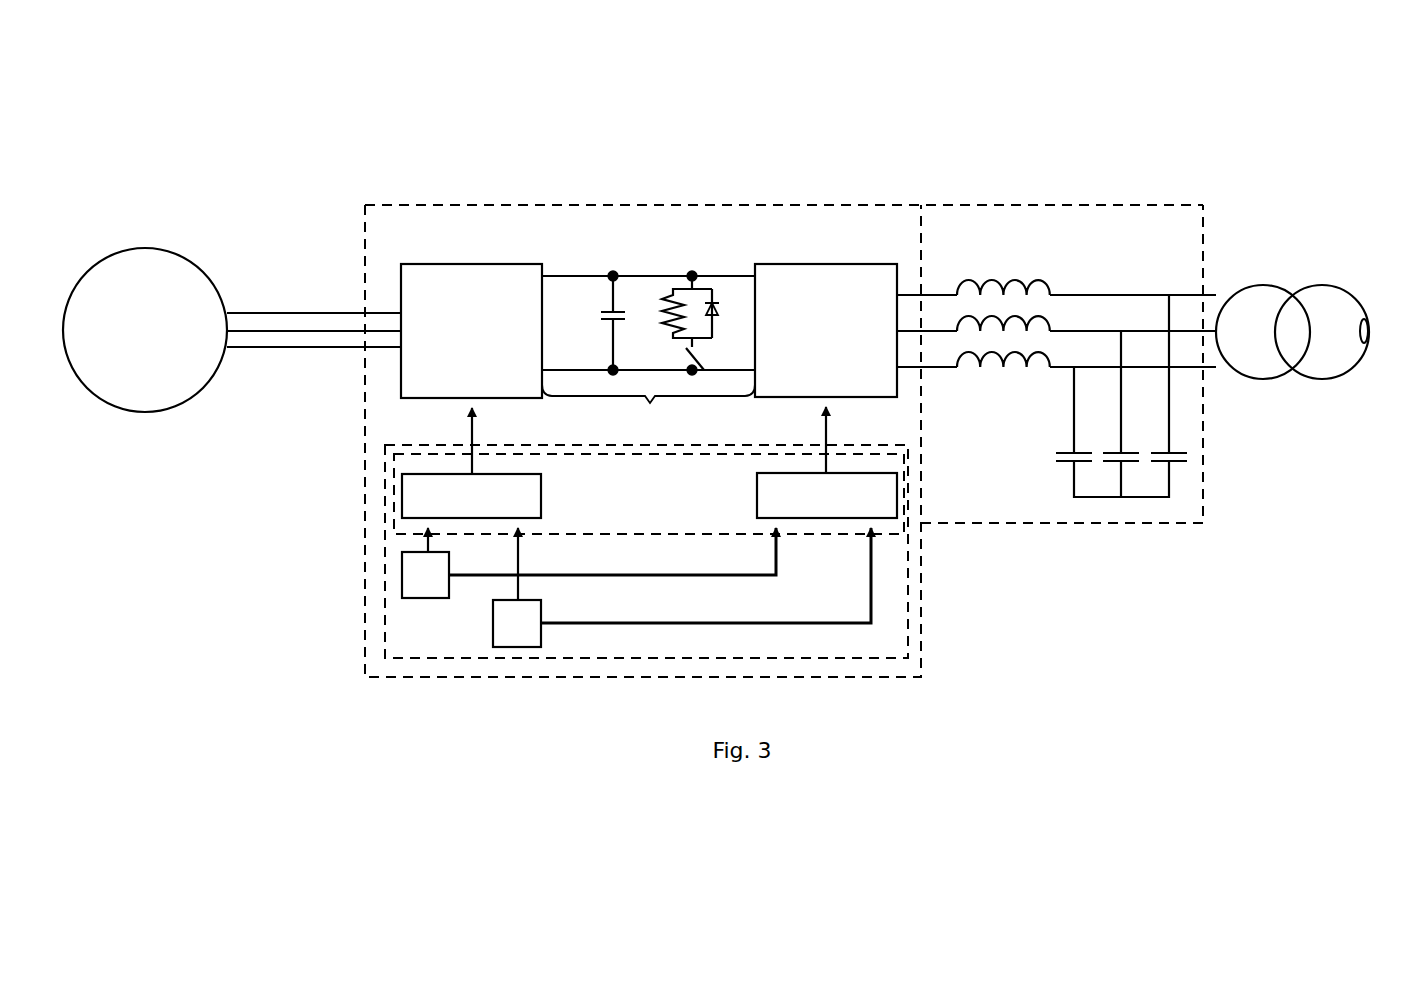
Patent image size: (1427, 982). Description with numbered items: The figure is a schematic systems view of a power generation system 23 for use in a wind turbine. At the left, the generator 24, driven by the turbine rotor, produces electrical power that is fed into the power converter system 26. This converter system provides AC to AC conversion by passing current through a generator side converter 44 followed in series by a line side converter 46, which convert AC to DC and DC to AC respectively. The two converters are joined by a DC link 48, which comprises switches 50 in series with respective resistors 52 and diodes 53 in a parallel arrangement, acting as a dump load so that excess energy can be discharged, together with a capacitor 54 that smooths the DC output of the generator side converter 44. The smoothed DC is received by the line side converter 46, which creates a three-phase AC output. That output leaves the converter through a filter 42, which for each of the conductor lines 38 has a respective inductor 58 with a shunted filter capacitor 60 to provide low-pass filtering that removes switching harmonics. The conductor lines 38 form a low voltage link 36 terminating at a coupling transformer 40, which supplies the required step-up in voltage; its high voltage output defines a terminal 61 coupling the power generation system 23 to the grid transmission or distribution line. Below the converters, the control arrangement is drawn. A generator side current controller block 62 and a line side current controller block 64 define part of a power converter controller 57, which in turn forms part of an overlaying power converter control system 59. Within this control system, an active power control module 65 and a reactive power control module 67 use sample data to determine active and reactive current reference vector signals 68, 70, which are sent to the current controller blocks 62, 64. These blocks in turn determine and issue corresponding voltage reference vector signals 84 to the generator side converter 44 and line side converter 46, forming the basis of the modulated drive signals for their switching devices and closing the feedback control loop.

The power generation system 23 is at (1088, 148).
The generator 24 is at (232, 330).
The power converter system 26 is at (391, 204).
The low voltage link 36 is at (1220, 384).
The conductor lines 38 is at (1217, 290).
The coupling transformer 40 is at (1262, 283).
The filter 42 is at (1140, 524).
The generator side converter 44 is at (471, 331).
The line side converter 46 is at (826, 330).
The DC link 48 is at (648, 355).
The switches 50 is at (704, 370).
The resistors 52 is at (657, 292).
The diodes 53 is at (718, 300).
The capacitor 54 is at (600, 302).
The power converter controller 57 is at (677, 455).
The inductor 58 is at (988, 380).
The power converter control system 59 is at (410, 663).
The filter capacitor 60 is at (1068, 466).
The terminal 61 is at (1367, 320).
The generator side current controller block 62 is at (471, 496).
The line side current controller block 64 is at (827, 495).
The active power control module 65 is at (425, 575).
The reactive power control module 67 is at (517, 623).
The active current reference vector signal 68 is at (425, 535).
The reactive current reference vector signal 70 is at (518, 557).
The voltage reference vector signals 84 is at (457, 415).